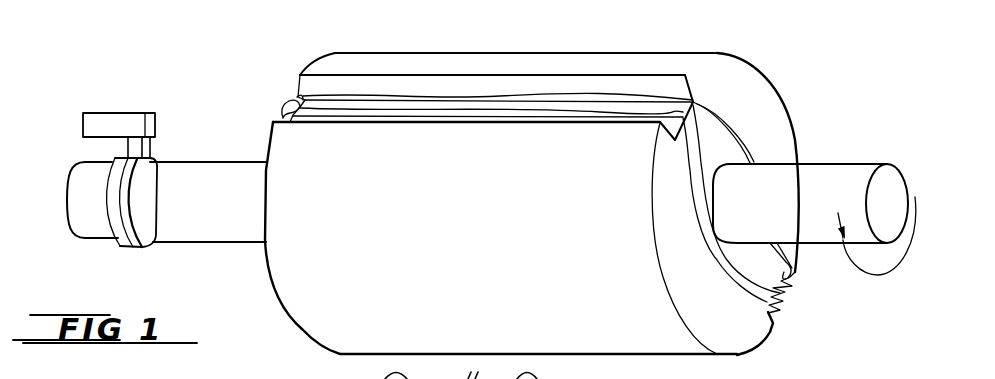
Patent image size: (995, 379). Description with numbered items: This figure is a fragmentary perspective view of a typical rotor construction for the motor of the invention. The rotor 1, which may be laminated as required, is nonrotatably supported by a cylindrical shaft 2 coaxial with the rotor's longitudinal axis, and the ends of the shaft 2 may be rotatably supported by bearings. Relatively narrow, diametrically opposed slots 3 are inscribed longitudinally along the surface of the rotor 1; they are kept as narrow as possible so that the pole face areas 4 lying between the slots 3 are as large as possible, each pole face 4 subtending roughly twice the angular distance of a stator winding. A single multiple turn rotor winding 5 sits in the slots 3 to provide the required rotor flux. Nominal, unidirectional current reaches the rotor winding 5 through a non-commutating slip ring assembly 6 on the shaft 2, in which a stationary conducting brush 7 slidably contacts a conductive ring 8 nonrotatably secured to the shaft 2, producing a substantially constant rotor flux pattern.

The rotor 1 is at (449, 0).
The cylindrical shaft 2 is at (833, 170).
The slots 3 is at (307, 83).
The pole face areas 4 is at (607, 62).
The rotor winding 5 is at (282, 117).
The slip ring assembly 6 is at (117, 118).
The conducting brush 7 is at (147, 145).
The conductive ring 8 is at (123, 247).